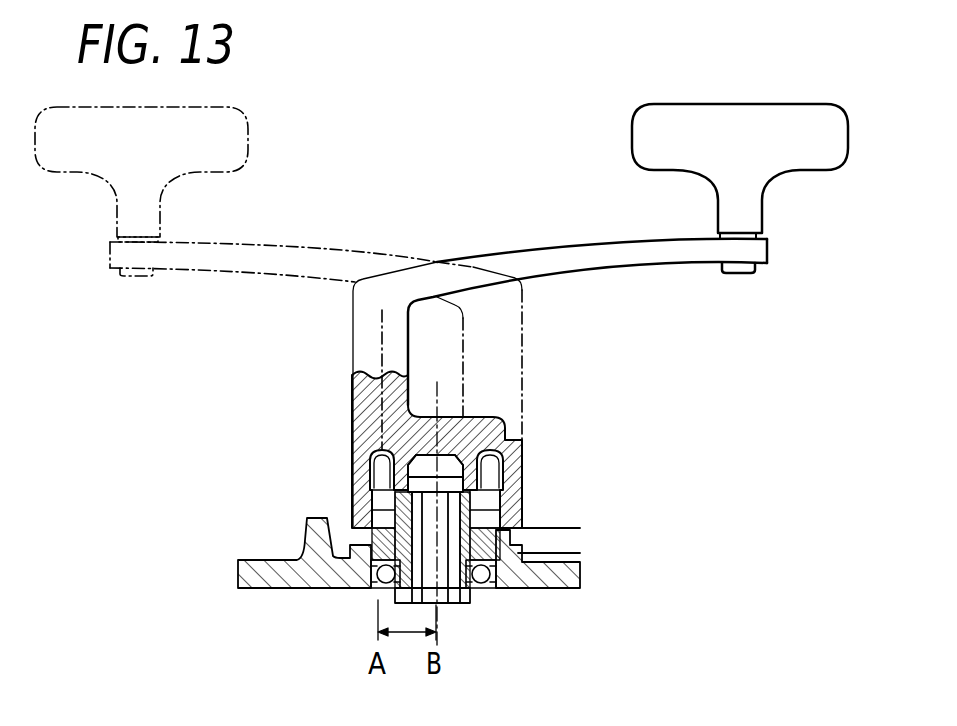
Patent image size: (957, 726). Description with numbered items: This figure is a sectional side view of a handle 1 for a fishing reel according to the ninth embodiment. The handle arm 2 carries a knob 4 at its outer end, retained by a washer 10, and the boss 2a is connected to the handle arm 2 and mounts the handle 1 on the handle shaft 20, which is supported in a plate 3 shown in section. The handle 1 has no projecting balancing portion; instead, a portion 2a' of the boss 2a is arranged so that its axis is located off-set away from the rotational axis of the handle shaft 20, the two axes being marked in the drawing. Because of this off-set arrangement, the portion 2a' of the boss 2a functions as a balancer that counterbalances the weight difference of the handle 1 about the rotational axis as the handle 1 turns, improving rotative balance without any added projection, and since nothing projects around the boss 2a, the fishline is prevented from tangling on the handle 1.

The handle 1 is at (441, 332).
The handle arm 2 is at (572, 260).
The boss 2a is at (476, 466).
The portion of the boss 2a' is at (305, 434).
The mounting plate 3 is at (270, 570).
The knob 4 is at (662, 146).
The washer 10 is at (758, 232).
The handle shaft 20 is at (443, 590).